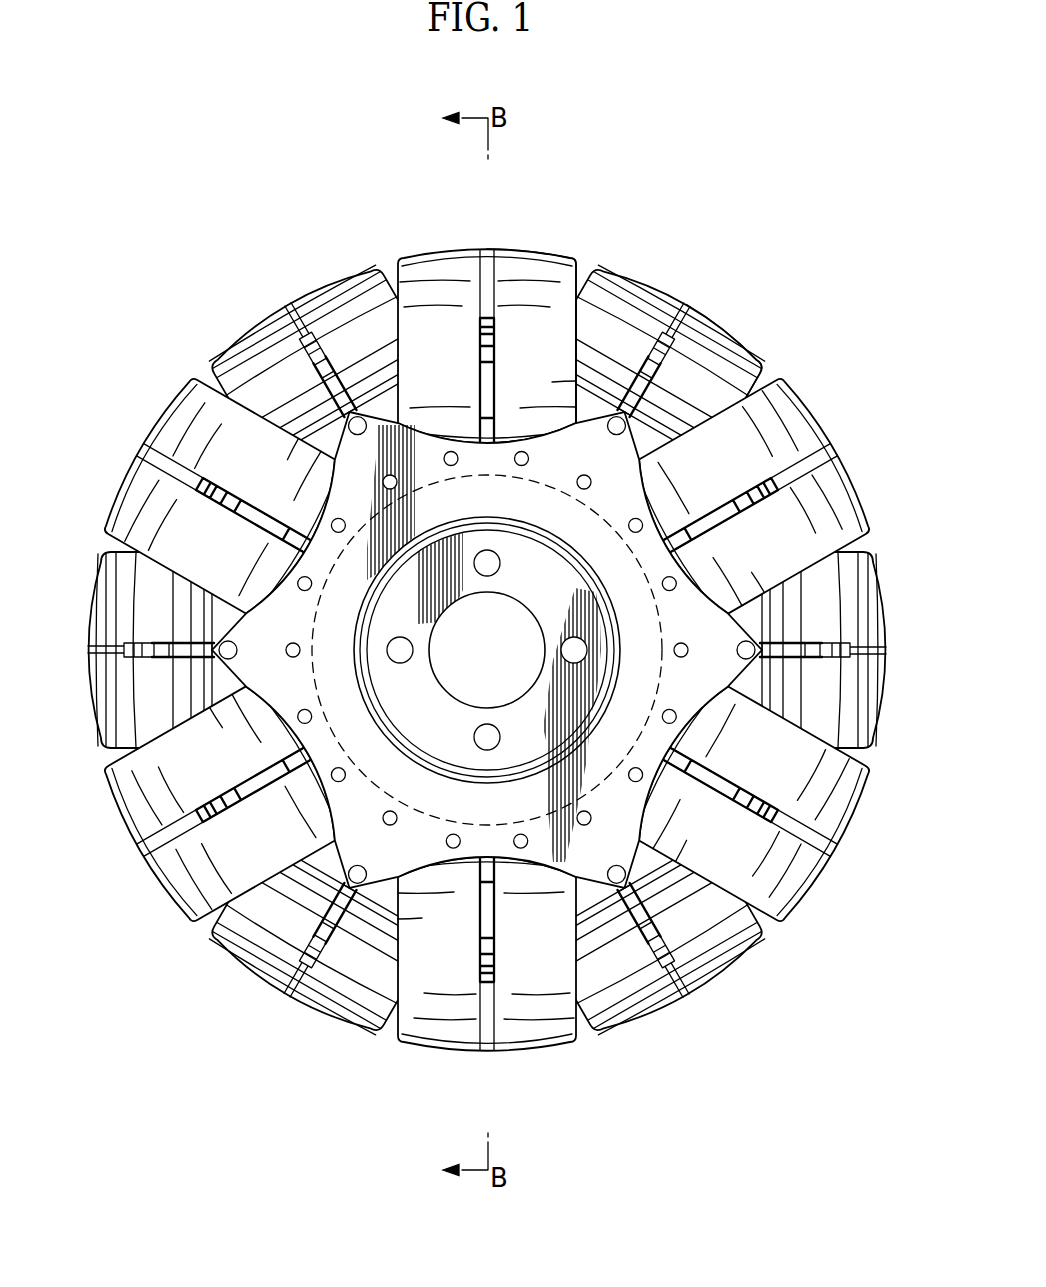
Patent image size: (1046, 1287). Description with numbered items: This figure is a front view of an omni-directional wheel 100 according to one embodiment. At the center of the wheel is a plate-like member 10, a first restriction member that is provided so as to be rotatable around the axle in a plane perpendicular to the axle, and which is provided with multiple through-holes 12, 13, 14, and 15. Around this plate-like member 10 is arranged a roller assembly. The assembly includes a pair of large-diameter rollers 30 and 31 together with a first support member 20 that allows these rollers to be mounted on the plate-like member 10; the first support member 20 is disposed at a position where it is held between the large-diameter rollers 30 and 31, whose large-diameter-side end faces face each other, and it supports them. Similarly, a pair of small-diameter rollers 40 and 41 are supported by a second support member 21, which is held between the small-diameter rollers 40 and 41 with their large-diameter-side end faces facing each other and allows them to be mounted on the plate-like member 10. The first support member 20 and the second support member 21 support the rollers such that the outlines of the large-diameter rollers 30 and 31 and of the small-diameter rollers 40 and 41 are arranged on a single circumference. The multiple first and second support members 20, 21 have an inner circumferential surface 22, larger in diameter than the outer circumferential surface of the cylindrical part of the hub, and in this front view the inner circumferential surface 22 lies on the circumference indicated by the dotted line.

The omni-directional wheel 100 is at (488, 601).
The plate-like member 10 is at (690, 617).
The through-hole 12 is at (448, 451).
The through-hole 13 is at (522, 451).
The through-hole 14 is at (612, 432).
The through-hole 15 is at (578, 486).
The first support member 20 is at (487, 318).
The second support member 21 is at (670, 330).
The inner circumferential surface 22 is at (338, 744).
The large-diameter roller 30 is at (434, 225).
The large-diameter roller 31 is at (529, 228).
The small-diameter roller 40 is at (643, 250).
The small-diameter roller 41 is at (746, 318).